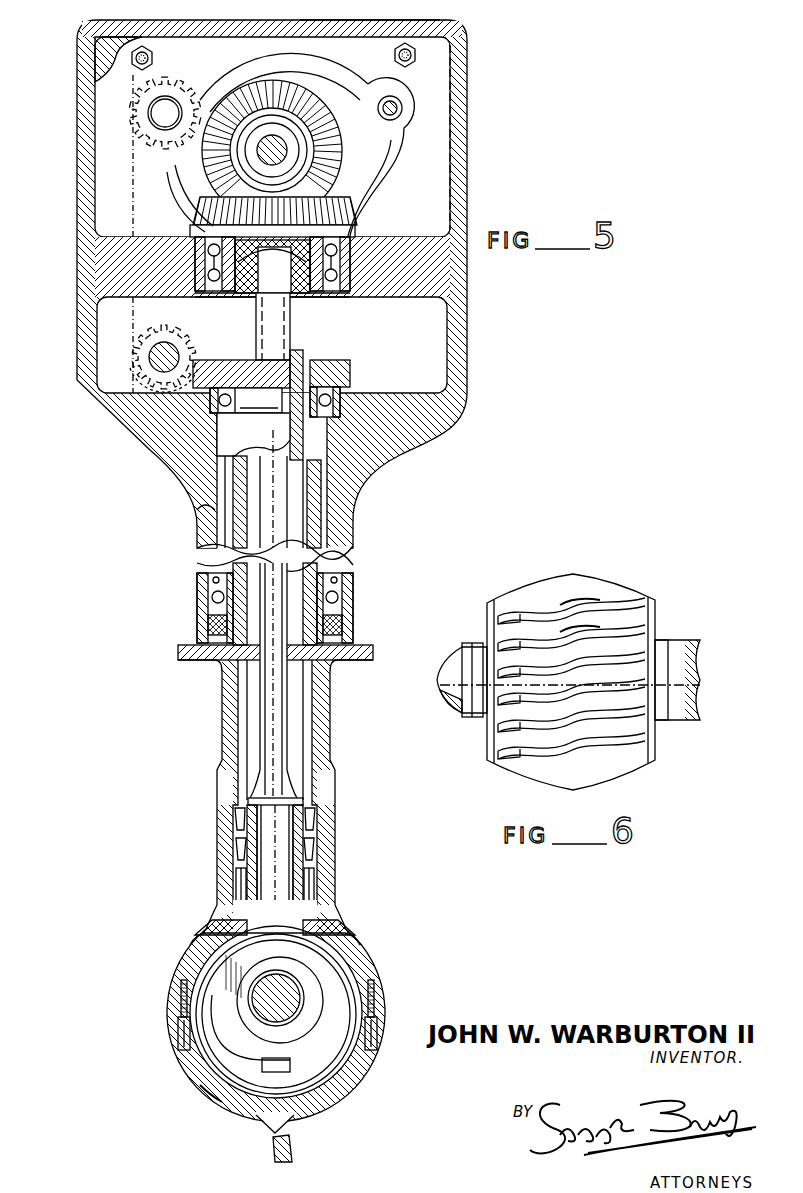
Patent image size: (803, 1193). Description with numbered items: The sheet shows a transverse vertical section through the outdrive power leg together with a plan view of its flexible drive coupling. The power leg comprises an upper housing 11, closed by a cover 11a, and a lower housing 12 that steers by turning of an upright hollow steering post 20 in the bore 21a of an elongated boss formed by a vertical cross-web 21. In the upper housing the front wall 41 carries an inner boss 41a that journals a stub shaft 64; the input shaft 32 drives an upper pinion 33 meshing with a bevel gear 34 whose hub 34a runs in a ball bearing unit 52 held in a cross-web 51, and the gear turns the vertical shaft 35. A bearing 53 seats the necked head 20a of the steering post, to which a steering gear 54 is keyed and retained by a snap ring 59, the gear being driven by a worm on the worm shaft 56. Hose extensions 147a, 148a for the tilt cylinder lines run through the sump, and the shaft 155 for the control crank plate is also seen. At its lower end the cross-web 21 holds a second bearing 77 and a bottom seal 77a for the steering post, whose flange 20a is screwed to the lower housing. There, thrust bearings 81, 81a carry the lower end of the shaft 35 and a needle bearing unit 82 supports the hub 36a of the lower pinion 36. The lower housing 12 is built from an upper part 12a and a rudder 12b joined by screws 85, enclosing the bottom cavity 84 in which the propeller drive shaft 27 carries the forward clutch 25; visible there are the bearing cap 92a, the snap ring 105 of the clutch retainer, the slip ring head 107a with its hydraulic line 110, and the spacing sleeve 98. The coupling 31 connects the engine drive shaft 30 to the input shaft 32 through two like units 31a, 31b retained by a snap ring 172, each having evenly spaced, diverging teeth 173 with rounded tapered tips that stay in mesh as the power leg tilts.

In FIG. 5, the upper housing 11 is at (470, 182).
In FIG. 5, the cover 11a is at (342, 22).
In FIG. 5, the lower housing 12 is at (337, 826).
In FIG. 5, the upper part 12a is at (372, 966).
In FIG. 5, the rudder 12b is at (262, 1128).
In FIG. 5, the steering post 20 is at (320, 548).
In FIG. 5, the necked head / anchoring flange 20a is at (363, 688).
In FIG. 5, the vertical cross-web 21 is at (418, 432).
In FIG. 5, the bore 21a is at (330, 518).
In FIG. 5, the forward clutch 25 is at (340, 978).
In FIG. 5, the drive shaft 27 is at (283, 990).
In FIG. 6, the drive shaft 30 is at (668, 648).
In FIG. 6, the coupling 31 is at (522, 582).
In FIG. 6, the coupling unit 31a is at (641, 602).
In FIG. 6, the coupling unit 31b is at (496, 606).
In FIG. 5, the input shaft 32 is at (275, 140).
In FIG. 6, the input shaft 32 is at (447, 652).
In FIG. 5, the upper pinion 33 is at (308, 112).
In FIG. 5, the bevel gear 34 is at (356, 212).
In FIG. 5, the hub 34a is at (222, 299).
In FIG. 5, the vertical shaft 35 is at (262, 333).
In FIG. 5, the lower pinion 36 is at (333, 932).
In FIG. 5, the hub 36a is at (290, 900).
In FIG. 5, the front wall 41 is at (437, 122).
In FIG. 5, the inner boss 41a is at (252, 68).
In FIG. 5, the cross-web 51 is at (388, 285).
In FIG. 5, the ball bearing unit 52 is at (320, 298).
In FIG. 5, the bearing 53 is at (346, 395).
In FIG. 5, the steering gear 54 is at (340, 362).
In FIG. 5, the worm shaft 56 is at (170, 350).
In FIG. 5, the snap ring 59 is at (310, 357).
In FIG. 5, the stub shaft 64 is at (160, 113).
In FIG. 5, the second bearing 77 is at (338, 603).
In FIG. 5, the bottom seal 77a is at (340, 625).
In FIG. 5, the thrust bearing 81 is at (232, 818).
In FIG. 5, the thrust bearing 81a is at (225, 842).
In FIG. 5, the needle bearing unit 82 is at (232, 880).
In FIG. 5, the bottom cavity 84 is at (203, 1088).
In FIG. 5, the screws 85 is at (380, 992).
In FIG. 5, the bearing cap 92a is at (325, 1082).
In FIG. 5, the spacing sleeve 98 is at (302, 993).
In FIG. 5, the snap ring 105 is at (340, 1032).
In FIG. 5, the enlarged head 107a is at (316, 1000).
In FIG. 5, the hydraulic line 110 is at (215, 1005).
In FIG. 5, the hose extension 147a is at (100, 78).
In FIG. 5, the hose extension 148a is at (430, 40).
In FIG. 5, the shaft 155 is at (402, 112).
In FIG. 6, the snap ring 172 is at (527, 630).
In FIG. 6, the teeth 173 is at (578, 596).